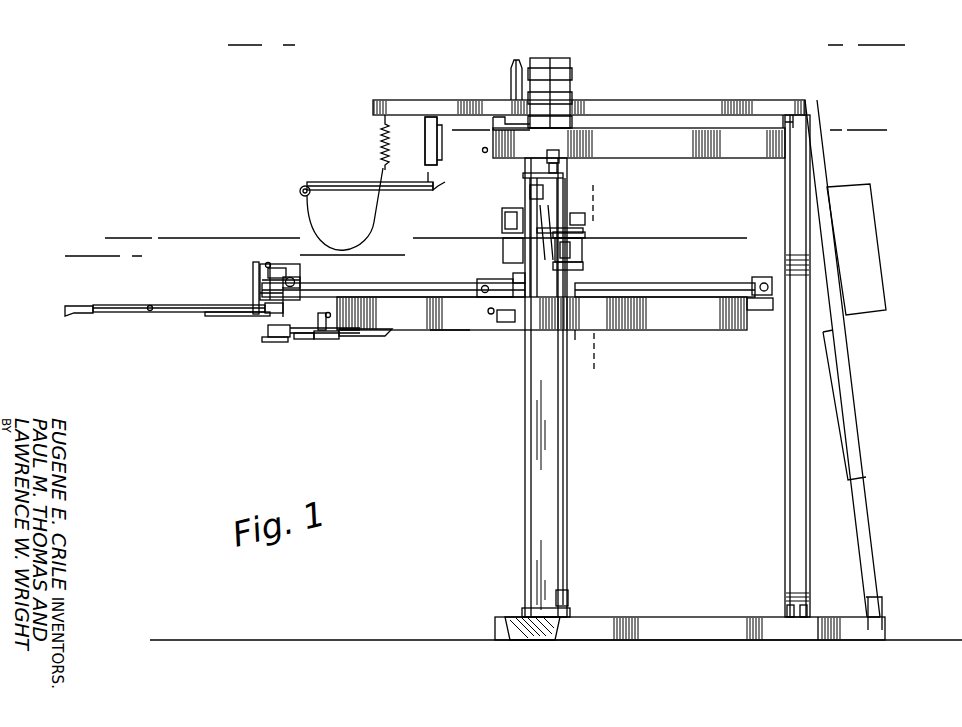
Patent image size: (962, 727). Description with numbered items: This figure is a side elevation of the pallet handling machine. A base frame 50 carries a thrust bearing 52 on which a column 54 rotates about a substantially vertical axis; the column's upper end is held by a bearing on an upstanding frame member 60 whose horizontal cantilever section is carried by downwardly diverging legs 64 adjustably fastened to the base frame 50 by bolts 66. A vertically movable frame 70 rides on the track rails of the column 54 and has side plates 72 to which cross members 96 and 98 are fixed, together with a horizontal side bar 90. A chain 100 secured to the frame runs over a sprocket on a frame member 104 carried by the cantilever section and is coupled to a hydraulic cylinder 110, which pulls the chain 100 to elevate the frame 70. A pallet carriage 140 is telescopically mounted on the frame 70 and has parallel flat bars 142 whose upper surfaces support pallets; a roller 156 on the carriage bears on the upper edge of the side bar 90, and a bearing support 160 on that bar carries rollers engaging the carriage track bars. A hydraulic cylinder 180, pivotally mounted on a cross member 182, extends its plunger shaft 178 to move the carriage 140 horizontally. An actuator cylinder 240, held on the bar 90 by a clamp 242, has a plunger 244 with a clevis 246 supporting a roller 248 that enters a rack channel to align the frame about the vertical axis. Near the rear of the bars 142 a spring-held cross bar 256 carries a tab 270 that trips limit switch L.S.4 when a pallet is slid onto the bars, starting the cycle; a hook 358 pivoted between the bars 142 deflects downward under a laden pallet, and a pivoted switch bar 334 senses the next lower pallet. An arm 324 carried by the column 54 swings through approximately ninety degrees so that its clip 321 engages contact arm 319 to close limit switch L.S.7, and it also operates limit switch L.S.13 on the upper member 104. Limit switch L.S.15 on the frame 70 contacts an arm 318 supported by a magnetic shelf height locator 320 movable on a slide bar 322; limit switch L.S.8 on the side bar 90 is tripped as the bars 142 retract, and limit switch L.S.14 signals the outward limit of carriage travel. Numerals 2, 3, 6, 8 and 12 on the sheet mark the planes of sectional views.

The section line 2- 2 is at (253, 22).
The stepping switch contacts 3 is at (132, 210).
The stepping switch contacts 6 is at (463, 131).
The limit switch 8 is at (82, 232).
The limit switch 12 is at (628, 202).
The base frame 50 is at (612, 617).
The thrust bearing 52 is at (512, 617).
The column 54 is at (549, 540).
The upstanding frame member 60 is at (755, 130).
The downwardly diverging legs 64 is at (786, 464).
The bolts 66 is at (787, 611).
The vertically movable frame 70 is at (572, 275).
The side plates 72 is at (514, 277).
The horizontal side bar 90 is at (693, 323).
The cross member 96 is at (585, 247).
The cross member 98 is at (507, 247).
The chain 100 is at (817, 186).
The frame member 104 is at (647, 101).
The hydraulic cylinder 110 is at (848, 460).
The pallet carriage 140 is at (250, 304).
The flat bars 142 is at (146, 305).
The roller 156 is at (300, 285).
The bearing support 160 is at (483, 280).
The plunger shaft 178 is at (425, 283).
The hydraulic cylinder 180 is at (714, 266).
The cross member 182 is at (744, 280).
The actuator cylinder 240 is at (352, 337).
The clamp 242 is at (324, 340).
The plunger 244 is at (302, 339).
The clevis 246 is at (276, 342).
The roller 248 is at (263, 331).
The limit switch operating cross bar 256 is at (259, 273).
The tab 270 is at (262, 263).
The arm 318 is at (586, 231).
The contact arm 319 is at (534, 192).
The magnetic shelf height locator 320 is at (588, 258).
The clip 321 is at (435, 190).
The slide bar 322 is at (564, 406).
The arm 324 is at (520, 175).
The switch bar 334 is at (220, 314).
The hook 358 is at (70, 306).
The limit switch 4 L.S.4 is at (284, 274).
The limit switch 7 L.S.7 is at (560, 163).
The limit switch 8 L.S.8 is at (502, 322).
The limit switch 13 L.S.13 is at (434, 160).
The limit switch 14 L.S.14 is at (322, 312).
The limit switch 15 L.S.15 is at (584, 220).